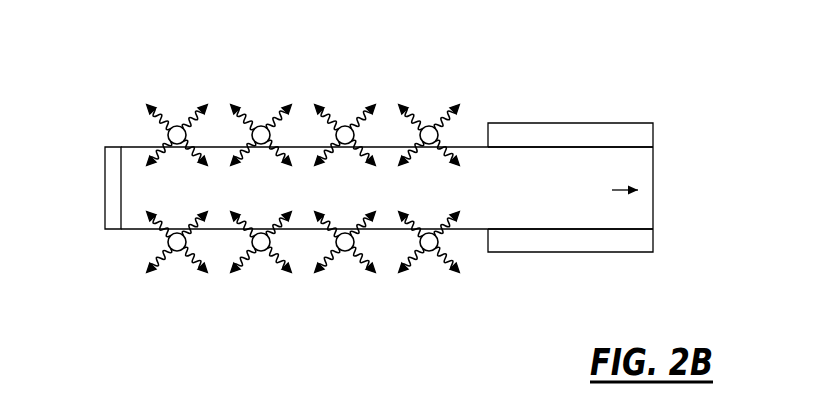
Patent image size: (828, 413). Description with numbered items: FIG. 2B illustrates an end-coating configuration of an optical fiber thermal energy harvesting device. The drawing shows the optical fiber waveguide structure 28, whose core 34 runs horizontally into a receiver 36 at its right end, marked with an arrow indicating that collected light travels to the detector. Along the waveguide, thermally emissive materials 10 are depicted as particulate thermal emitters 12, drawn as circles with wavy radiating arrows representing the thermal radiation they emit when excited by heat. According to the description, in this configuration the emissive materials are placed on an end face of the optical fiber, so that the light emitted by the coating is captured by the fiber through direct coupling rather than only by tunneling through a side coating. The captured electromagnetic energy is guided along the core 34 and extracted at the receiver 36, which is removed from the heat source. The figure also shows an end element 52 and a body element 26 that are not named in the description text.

The thermally emissive materials 10 is at (435, 95).
The particulate thermal emitters 12 is at (175, 123).
The light guide tube 26 is at (140, 232).
The optical fiber waveguide structure 28 is at (367, 55).
The core 34 is at (507, 165).
The receiver 36 is at (603, 163).
The end cap / reflector 52 is at (110, 140).